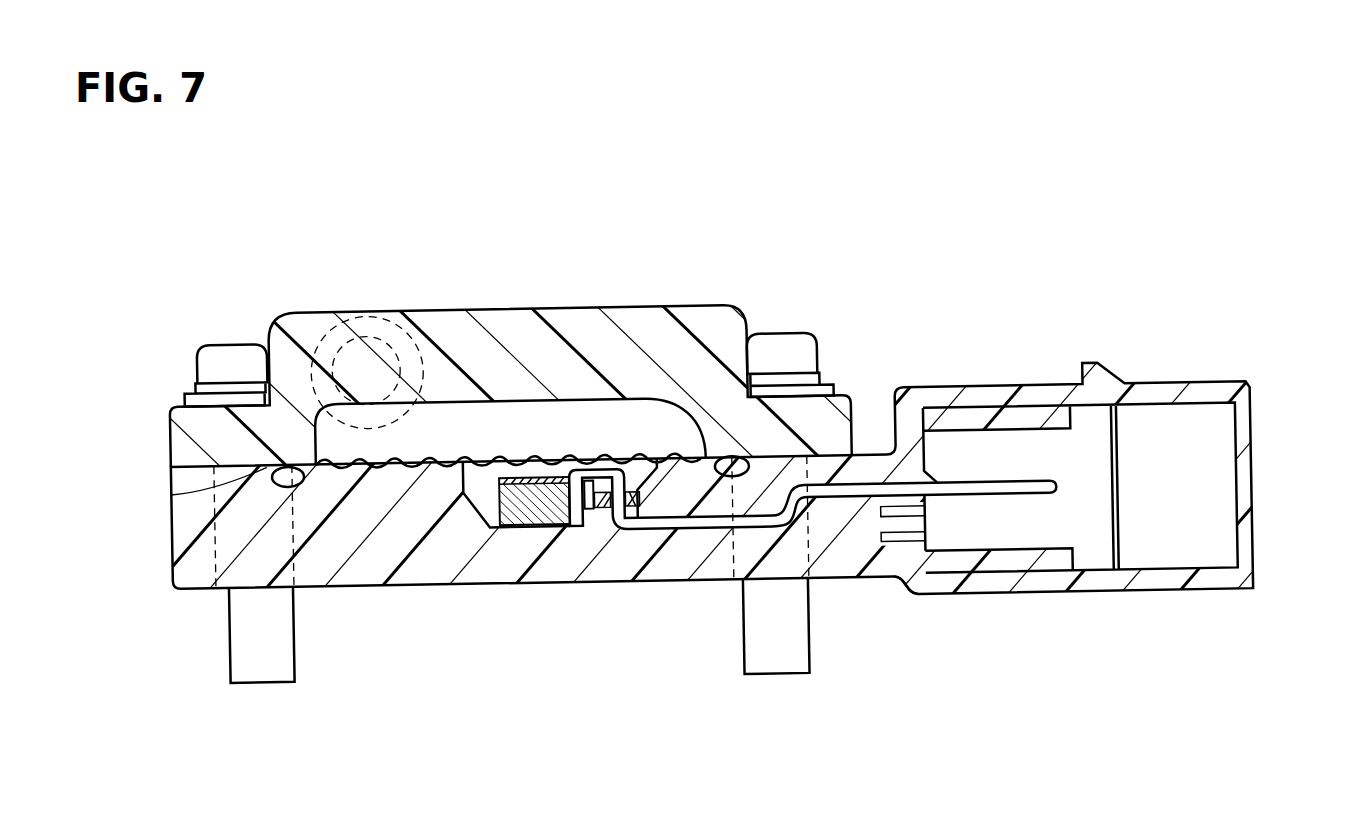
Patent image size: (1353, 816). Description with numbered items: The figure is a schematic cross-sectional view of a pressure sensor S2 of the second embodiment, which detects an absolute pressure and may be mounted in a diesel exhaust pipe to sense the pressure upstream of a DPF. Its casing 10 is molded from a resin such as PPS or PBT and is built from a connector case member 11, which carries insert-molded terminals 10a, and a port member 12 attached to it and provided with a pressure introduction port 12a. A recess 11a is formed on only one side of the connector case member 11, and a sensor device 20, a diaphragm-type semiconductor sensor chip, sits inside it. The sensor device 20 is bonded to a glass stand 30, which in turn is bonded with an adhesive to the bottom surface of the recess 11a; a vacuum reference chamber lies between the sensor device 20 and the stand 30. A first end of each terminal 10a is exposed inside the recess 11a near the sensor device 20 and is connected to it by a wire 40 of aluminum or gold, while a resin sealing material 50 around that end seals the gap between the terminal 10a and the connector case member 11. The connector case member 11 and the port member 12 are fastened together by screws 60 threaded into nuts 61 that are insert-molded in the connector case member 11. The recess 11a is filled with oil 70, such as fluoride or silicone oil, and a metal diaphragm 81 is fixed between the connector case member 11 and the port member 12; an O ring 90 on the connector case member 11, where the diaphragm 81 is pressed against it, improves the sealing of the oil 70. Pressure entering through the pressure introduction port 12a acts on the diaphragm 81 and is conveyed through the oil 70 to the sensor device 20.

The casing 10 is at (937, 408).
The terminals 10a is at (1058, 490).
The connector case member 11 is at (906, 585).
The recess 11a is at (440, 452).
The port member 12 is at (310, 325).
The pressure introduction port 12a is at (384, 330).
The sensor device 20 is at (538, 478).
The stand 30 is at (564, 481).
The wire 40 is at (598, 481).
The sealing material 50 is at (631, 494).
The screws 60 is at (240, 347).
The nuts 61 is at (213, 541).
The oil 70 is at (478, 476).
The diaphragm 81 is at (498, 477).
The O ring 90 is at (172, 489).
The pressure sensor S2 is at (1054, 316).